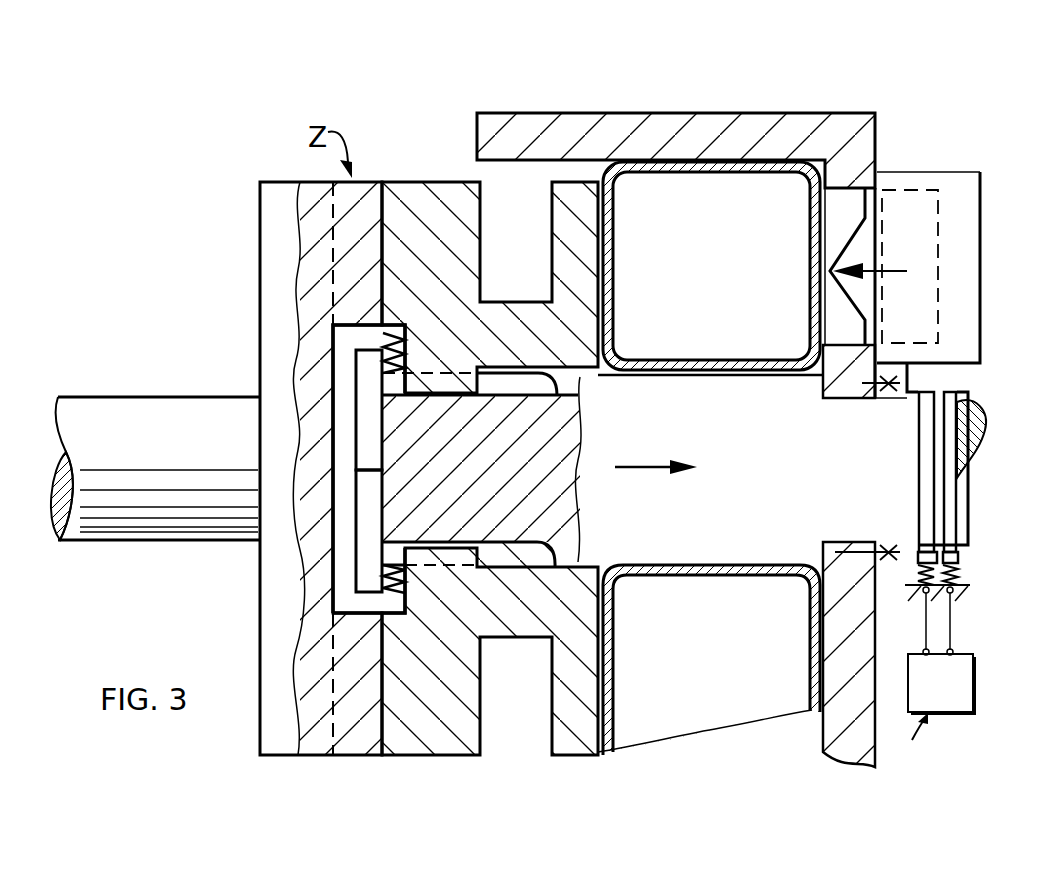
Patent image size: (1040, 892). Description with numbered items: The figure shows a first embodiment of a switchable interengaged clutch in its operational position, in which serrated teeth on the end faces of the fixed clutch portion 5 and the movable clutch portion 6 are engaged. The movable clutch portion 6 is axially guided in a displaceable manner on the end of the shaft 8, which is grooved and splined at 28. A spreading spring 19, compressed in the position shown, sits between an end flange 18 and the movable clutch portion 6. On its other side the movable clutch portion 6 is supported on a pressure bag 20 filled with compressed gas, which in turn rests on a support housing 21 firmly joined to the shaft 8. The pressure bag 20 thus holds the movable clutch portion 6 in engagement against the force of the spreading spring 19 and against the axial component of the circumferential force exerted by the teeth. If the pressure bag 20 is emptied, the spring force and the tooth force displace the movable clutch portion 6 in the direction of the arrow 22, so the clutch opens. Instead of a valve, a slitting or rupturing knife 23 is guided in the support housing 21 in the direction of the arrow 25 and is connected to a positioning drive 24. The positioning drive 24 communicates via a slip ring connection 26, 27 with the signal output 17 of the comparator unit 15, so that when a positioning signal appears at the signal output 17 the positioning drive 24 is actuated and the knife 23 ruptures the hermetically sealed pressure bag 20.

The fixed clutch portion 5 is at (283, 318).
The movable clutch portion 6 is at (412, 195).
The shaft 8 is at (957, 430).
The comparator unit 15 is at (950, 697).
The signal output 17 is at (942, 652).
The end flange 18 is at (356, 373).
The spreading spring 19 is at (383, 597).
The pressure bag 20 is at (603, 255).
The support housing 21 is at (850, 150).
The arrow 22 is at (643, 470).
The slitting or rupturing knife 23 is at (852, 250).
The positioning drive 24 is at (958, 200).
The arrow 25 is at (893, 268).
The slip ring connection 26 is at (925, 443).
The slip ring connection 27 is at (960, 558).
The grooved and splined shaft portion 28 is at (390, 552).